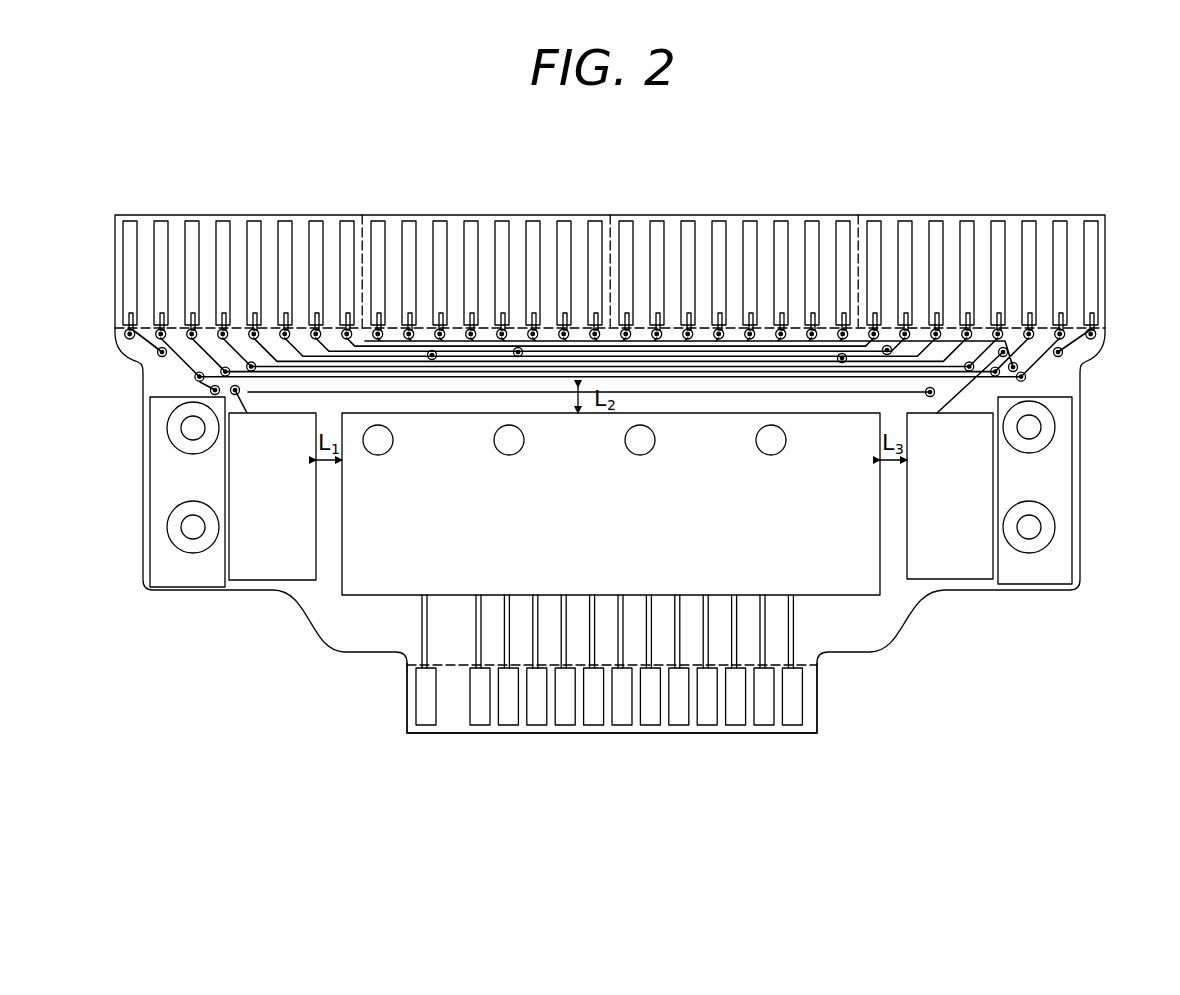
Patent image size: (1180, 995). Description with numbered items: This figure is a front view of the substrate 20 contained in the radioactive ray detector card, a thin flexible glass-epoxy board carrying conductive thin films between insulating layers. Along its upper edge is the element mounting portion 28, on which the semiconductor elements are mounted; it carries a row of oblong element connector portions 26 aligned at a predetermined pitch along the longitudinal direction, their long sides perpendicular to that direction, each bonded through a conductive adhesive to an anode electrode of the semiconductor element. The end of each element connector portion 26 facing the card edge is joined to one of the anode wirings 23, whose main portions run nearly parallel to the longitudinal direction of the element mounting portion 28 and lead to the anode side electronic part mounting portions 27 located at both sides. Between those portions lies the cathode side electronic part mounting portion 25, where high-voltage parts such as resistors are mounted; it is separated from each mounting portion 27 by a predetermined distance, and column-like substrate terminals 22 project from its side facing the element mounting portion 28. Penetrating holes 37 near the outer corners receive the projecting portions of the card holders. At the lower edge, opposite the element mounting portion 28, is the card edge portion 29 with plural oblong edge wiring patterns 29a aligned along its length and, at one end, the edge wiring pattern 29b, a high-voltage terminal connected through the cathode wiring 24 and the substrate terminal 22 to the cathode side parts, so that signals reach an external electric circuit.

The substrate 20 is at (1127, 188).
The substrate terminal 22 is at (378, 444).
The anode wiring 23 is at (195, 360).
The cathode wiring 24 is at (422, 622).
The second electrode side electronic part mounting portion 25 is at (862, 595).
The element connector portion 26 is at (129, 232).
The first electrode side electronic part mounting portion 27 is at (273, 580).
The element mounting portion 28 is at (241, 228).
The card edge portion 29 is at (810, 718).
The edge wiring pattern 29a is at (648, 713).
The edge wiring pattern 29b is at (425, 713).
The penetrating hole 37 is at (190, 428).